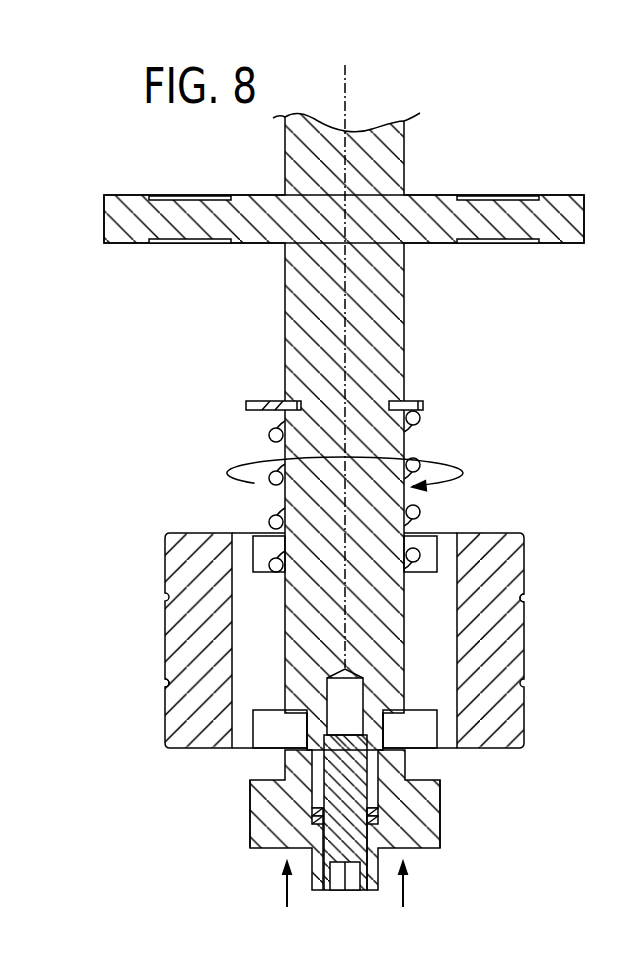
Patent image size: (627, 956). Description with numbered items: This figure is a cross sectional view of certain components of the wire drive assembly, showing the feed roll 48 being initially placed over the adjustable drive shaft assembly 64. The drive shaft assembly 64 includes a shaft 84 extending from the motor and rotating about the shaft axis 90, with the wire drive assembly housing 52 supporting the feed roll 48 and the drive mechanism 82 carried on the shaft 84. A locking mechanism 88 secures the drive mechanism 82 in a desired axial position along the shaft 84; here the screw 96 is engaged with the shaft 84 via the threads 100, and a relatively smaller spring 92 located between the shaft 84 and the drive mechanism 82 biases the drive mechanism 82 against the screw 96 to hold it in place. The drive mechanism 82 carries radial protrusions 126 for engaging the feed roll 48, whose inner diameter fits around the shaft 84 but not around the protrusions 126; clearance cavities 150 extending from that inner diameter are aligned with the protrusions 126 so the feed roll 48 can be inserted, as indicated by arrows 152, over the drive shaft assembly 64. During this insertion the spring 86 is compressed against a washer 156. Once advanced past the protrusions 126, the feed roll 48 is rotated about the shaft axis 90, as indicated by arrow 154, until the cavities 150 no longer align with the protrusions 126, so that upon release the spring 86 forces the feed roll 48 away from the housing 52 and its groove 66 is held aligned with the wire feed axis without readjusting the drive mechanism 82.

The feed roll 48 is at (523, 642).
The wire drive assembly housing 52 is at (445, 195).
The adjustable drive shaft assembly 64 is at (102, 366).
The groove 66 is at (520, 592).
The drive mechanism 82 is at (414, 848).
The shaft 84 is at (286, 325).
The spring 86 is at (269, 433).
The locking mechanism 88 is at (290, 836).
The shaft axis 90 is at (345, 102).
The spring 92 is at (312, 821).
The screw 96 is at (353, 892).
The threads 100 is at (367, 755).
The protrusions 126 is at (250, 820).
The cavities 150 is at (252, 608).
The arrows 152 is at (286, 897).
The arrow 154 is at (440, 465).
The washer 156 is at (406, 400).